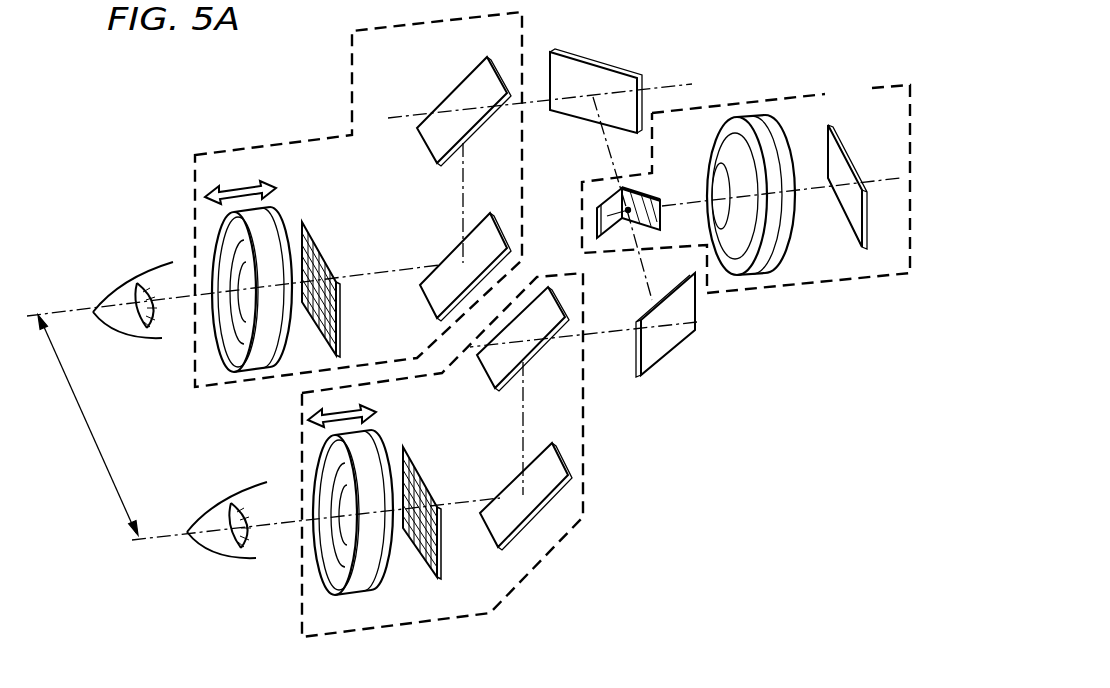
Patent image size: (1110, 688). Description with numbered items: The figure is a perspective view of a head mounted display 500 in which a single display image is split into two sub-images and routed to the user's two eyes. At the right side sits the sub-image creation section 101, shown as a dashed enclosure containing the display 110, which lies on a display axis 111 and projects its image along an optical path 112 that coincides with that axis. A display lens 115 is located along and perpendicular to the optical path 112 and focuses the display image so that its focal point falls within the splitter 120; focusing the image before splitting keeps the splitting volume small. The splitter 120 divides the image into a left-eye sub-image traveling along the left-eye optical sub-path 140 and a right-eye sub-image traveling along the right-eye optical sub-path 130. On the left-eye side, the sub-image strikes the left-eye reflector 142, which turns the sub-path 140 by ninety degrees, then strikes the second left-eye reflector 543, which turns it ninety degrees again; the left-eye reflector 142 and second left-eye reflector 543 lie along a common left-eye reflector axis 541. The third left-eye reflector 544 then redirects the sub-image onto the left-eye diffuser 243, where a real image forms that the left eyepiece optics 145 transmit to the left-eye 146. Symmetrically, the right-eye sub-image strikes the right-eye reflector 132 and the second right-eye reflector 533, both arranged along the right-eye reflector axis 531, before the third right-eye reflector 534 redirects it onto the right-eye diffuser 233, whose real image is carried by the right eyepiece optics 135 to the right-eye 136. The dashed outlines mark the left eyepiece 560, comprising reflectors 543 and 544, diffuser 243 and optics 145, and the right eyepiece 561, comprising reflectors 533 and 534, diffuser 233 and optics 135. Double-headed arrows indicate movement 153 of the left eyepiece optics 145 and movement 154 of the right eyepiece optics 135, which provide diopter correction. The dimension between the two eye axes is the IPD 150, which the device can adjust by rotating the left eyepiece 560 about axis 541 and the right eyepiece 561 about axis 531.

The head mounted display 500 is at (198, 95).
The left eyepiece 560 is at (194, 177).
The right eyepiece 561 is at (300, 432).
The sub-image creation section 101 is at (813, 287).
The movement of left eyepiece optics 153 is at (262, 181).
The movement of right eyepiece optics 154 is at (376, 416).
The left eyepiece optics 145 is at (277, 226).
The right eyepiece optics 135 is at (387, 570).
The left-eye diffuser 243 is at (323, 256).
The right-eye diffuser 233 is at (440, 560).
The second left-eye reflector 543 is at (462, 88).
The left-eye reflector axis 541 is at (396, 122).
The third left-eye reflector 544 is at (428, 297).
The second right-eye reflector 533 is at (493, 387).
The third right-eye reflector 534 is at (505, 488).
The right-eye reflector axis 531 is at (597, 333).
The left-eye reflector 142 is at (603, 66).
The left-eye optical sub-path 140 is at (616, 143).
The right-eye optical sub-path 130 is at (625, 258).
The splitter 120 is at (666, 186).
The right-eye reflector 132 is at (667, 345).
The display lens 115 is at (774, 133).
The optical path 112 is at (797, 192).
The display axis 111 is at (870, 182).
The display 110 is at (828, 125).
The left-eye 146 is at (118, 292).
The right-eye 136 is at (220, 515).
The IPD 150 is at (83, 430).